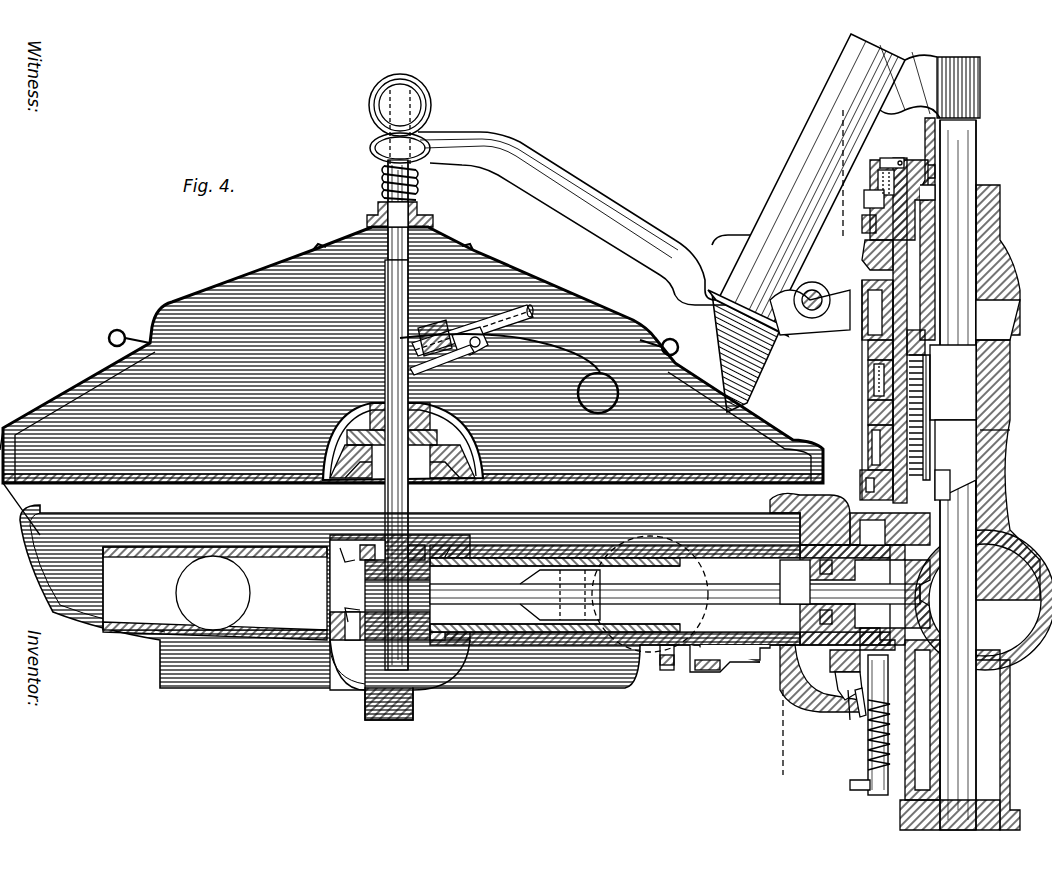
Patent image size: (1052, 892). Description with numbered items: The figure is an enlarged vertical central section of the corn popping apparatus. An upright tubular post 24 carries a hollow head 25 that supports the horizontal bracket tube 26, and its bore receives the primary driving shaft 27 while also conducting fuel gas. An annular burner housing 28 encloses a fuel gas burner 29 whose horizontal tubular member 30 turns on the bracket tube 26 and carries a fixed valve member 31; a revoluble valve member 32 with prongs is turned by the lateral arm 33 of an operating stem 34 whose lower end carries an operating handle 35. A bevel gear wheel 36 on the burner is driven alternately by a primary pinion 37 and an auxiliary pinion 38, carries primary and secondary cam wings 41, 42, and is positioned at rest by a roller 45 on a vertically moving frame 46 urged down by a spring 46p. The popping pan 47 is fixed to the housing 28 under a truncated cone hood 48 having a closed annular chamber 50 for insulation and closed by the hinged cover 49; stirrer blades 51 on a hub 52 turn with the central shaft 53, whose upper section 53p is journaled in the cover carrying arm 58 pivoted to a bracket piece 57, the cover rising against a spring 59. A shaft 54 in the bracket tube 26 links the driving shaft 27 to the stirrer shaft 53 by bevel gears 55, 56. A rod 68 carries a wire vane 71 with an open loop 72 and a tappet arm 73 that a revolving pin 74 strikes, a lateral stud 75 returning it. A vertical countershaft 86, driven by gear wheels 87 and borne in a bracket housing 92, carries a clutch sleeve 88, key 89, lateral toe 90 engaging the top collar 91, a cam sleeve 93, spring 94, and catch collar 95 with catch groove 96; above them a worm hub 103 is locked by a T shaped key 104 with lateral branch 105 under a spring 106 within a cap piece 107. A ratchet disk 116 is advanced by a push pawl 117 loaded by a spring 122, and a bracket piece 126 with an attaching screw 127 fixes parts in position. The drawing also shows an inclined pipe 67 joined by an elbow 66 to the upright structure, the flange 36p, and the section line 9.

The upright tubular post 24 is at (975, 513).
The hollow head 25 is at (1020, 600).
The horizontal bracket tube 26 is at (612, 648).
The primary driving shaft 27 is at (958, 475).
The burner housing 28 is at (108, 625).
The fuel gas burner 29 is at (266, 558).
The horizontal tubular member 30 is at (520, 645).
The fixed valve member 31 is at (810, 630).
The revoluble valve member 32 is at (810, 660).
The lateral arm 33 is at (895, 643).
The operating stem 34 is at (870, 742).
The operating handle 35 is at (850, 784).
The bevel gear wheel 36 is at (800, 502).
The flange plate 36p is at (762, 660).
The primary pinion 37 is at (975, 468).
The auxiliary pinion 38 is at (950, 486).
The primary cam wing 41 is at (862, 470).
The secondary cam wing 42 is at (856, 725).
The positioning roller 45 is at (830, 665).
The vertically moving frame 46 is at (840, 690).
The spring 46p is at (840, 760).
The popping pan 47 is at (133, 477).
The top member or hood 48 is at (72, 388).
The hinged cover 49 is at (248, 282).
The closed annular chamber 50 is at (30, 395).
The stirrer blades 51 is at (80, 470).
The hub 52 is at (340, 448).
The central shaft 53 is at (385, 380).
The upper shaft section 53p is at (420, 220).
The shaft 54 is at (675, 594).
The bevel gear 55 is at (975, 568).
The bevel gear 56 is at (362, 620).
The bracket piece 57 is at (1012, 300).
The carrying arm 58 is at (590, 186).
The spring 59 is at (384, 186).
The elbow 66 is at (860, 62).
The inclined pipe 67 is at (805, 140).
The radially disposed rod 68 is at (527, 300).
The vane or blade 71 is at (558, 360).
The open loop 72 is at (592, 413).
The tappet arm or sector 73 is at (415, 338).
The revolving pin 74 is at (437, 365).
The lateral stud 75 is at (428, 320).
The vertical countershaft 86 is at (915, 375).
The gear wheels 87 is at (900, 540).
The clutch sleeve 88 is at (868, 358).
The key or spline 89 is at (866, 395).
The lateral toe 90 is at (868, 430).
The top collar 91 is at (868, 445).
The bracket housing 92 is at (772, 320).
The cam sleeve 93 is at (862, 344).
The spring 94 is at (868, 378).
The catch collar 95 is at (865, 255).
The peripheral catch groove 96 is at (850, 315).
The worm hub 103 is at (930, 180).
The T shaped key 104 is at (865, 224).
The lateral branch 105 is at (862, 180).
The spring 106 is at (900, 158).
The cap piece 107 is at (932, 160).
The ratchet disk 116 is at (925, 392).
The push pawl 117 is at (925, 340).
The spring 122 is at (930, 410).
The bracket piece 126 is at (712, 668).
The attaching screw 127 is at (664, 668).
The section line 9- 9 is at (813, 444).